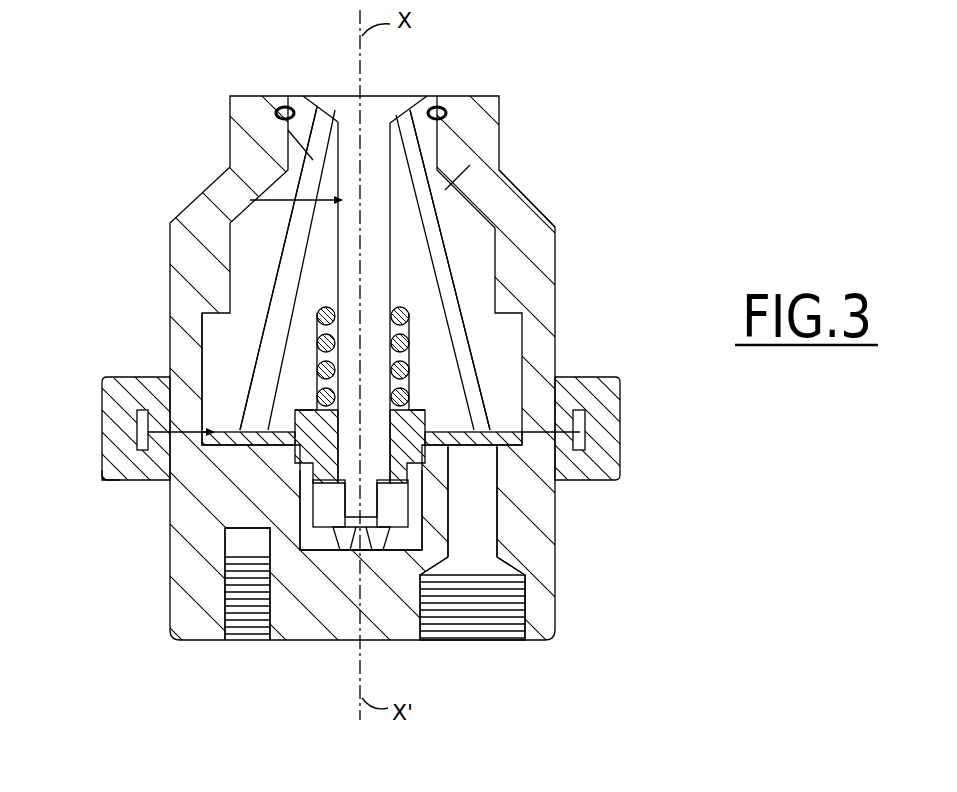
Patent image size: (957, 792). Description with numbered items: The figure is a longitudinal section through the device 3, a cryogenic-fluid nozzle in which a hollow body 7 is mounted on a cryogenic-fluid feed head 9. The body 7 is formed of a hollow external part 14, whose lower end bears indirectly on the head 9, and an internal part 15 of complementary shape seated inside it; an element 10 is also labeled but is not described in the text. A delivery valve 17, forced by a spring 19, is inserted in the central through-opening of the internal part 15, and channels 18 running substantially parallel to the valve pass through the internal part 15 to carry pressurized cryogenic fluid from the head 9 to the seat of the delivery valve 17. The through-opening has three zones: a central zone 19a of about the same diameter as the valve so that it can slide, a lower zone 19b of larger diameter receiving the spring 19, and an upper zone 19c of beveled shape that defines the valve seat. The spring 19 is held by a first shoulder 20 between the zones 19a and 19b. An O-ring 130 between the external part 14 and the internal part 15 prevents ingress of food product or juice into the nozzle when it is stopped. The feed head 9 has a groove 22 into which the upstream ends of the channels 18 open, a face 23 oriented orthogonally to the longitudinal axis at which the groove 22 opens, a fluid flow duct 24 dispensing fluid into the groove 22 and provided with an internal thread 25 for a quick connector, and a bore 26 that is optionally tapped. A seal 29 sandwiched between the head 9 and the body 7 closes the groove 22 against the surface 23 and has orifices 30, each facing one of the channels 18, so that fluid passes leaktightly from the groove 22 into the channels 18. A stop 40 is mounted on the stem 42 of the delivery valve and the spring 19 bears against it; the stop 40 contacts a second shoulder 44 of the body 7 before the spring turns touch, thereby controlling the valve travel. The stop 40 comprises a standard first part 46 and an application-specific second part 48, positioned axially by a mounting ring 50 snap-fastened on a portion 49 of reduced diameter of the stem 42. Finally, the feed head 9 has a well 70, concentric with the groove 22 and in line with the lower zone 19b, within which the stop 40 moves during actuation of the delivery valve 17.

The valve device 3 is at (104, 134).
The body 7 is at (652, 241).
The cryogenic-fluid feed head 9 is at (660, 549).
The right flange ring 10 is at (621, 392).
The hollow external part 14 is at (548, 292).
The internal part 15 is at (203, 364).
The delivery valve 17 is at (250, 200).
The channels 18 is at (313, 160).
The spring 19 is at (285, 252).
The central zone 19a is at (300, 243).
The lower zone 19b is at (500, 312).
The upper zone 19c is at (393, 110).
The first shoulder 20 is at (392, 268).
The groove 22 is at (108, 478).
The face 23 is at (200, 377).
The fluid flow duct 24 is at (493, 507).
The internal thread 25 is at (525, 602).
The bore 26 is at (225, 592).
The seal 29 is at (528, 390).
The orifices 30 is at (262, 441).
The stop 40 is at (295, 478).
The stem 42 is at (538, 210).
The second shoulder 44 is at (425, 403).
The first part 46 is at (498, 539).
The second part 48 is at (306, 334).
The portion of reduced diameter 49 is at (300, 576).
The mounting ring 50 is at (318, 530).
The well 70 is at (340, 552).
The O-ring 130 is at (280, 105).